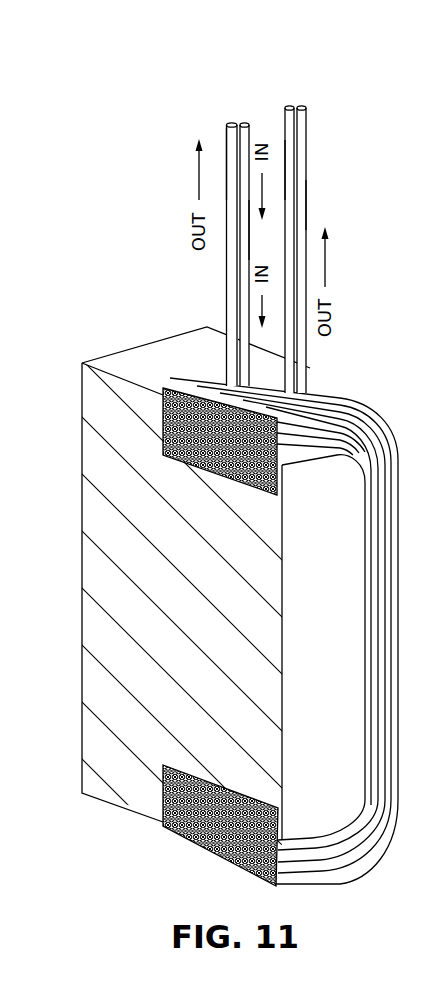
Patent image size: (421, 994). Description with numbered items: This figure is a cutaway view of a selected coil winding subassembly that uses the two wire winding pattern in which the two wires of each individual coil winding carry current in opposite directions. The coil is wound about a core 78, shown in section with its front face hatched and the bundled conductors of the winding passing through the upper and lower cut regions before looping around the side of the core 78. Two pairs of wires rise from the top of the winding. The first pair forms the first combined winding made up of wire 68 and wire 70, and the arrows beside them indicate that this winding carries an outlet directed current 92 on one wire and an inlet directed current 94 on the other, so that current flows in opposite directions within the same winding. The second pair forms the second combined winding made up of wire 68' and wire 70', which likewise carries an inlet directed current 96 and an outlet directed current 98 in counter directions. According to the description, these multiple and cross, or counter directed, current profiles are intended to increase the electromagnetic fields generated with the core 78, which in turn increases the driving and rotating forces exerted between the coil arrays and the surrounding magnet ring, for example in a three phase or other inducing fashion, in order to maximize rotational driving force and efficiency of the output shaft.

The core 78 is at (93, 615).
The wire of two wire coil winding pattern 68 is at (202, 215).
The wire of two wire coil winding pattern 70 is at (232, 214).
The wire of second combined winding 68' is at (279, 213).
The wire of second combined winding 70' is at (331, 229).
The outlet directed current 92 is at (226, 140).
The inlet directed current 94 is at (243, 242).
The inlet directed current 96 is at (292, 183).
The outlet directed current 98 is at (308, 205).